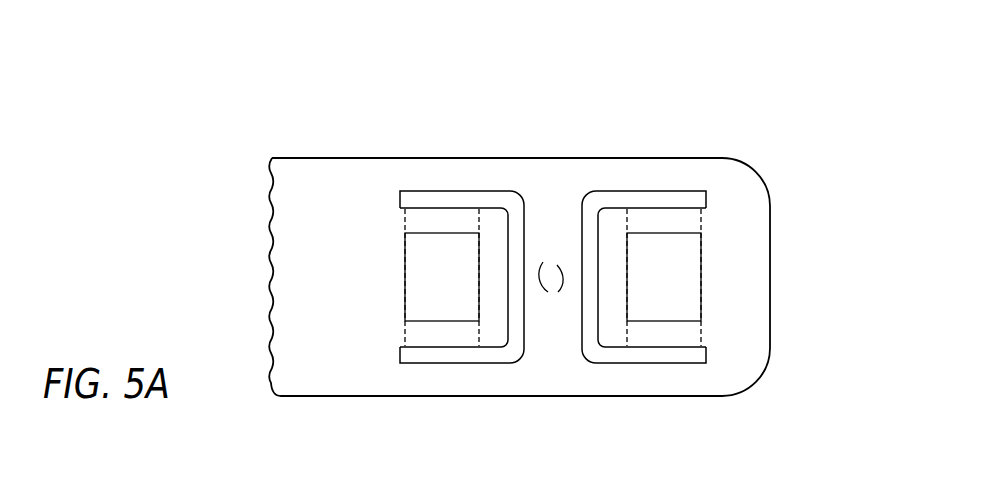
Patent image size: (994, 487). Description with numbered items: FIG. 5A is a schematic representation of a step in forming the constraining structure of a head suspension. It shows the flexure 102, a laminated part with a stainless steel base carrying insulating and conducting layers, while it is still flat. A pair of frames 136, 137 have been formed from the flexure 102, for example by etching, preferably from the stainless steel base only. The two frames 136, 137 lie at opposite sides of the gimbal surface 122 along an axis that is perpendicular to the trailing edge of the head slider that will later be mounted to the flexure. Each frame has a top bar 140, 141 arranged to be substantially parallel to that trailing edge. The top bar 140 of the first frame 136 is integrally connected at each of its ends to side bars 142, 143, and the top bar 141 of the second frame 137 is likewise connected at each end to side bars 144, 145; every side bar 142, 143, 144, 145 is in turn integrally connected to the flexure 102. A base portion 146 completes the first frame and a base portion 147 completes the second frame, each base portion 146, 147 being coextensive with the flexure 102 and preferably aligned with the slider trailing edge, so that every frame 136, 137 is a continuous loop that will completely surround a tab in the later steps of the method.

The flexure 102 is at (773, 80).
The gimbal surface 122 is at (543, 262).
The frame 136 is at (492, 207).
The frame 137 is at (615, 207).
The top bar 140 is at (510, 331).
The top bar 141 is at (596, 331).
The side bar 142 is at (423, 207).
The side bar 143 is at (433, 321).
The side bar 144 is at (683, 207).
The side bar 145 is at (668, 321).
The base portion 146 is at (405, 251).
The base portion 147 is at (702, 253).